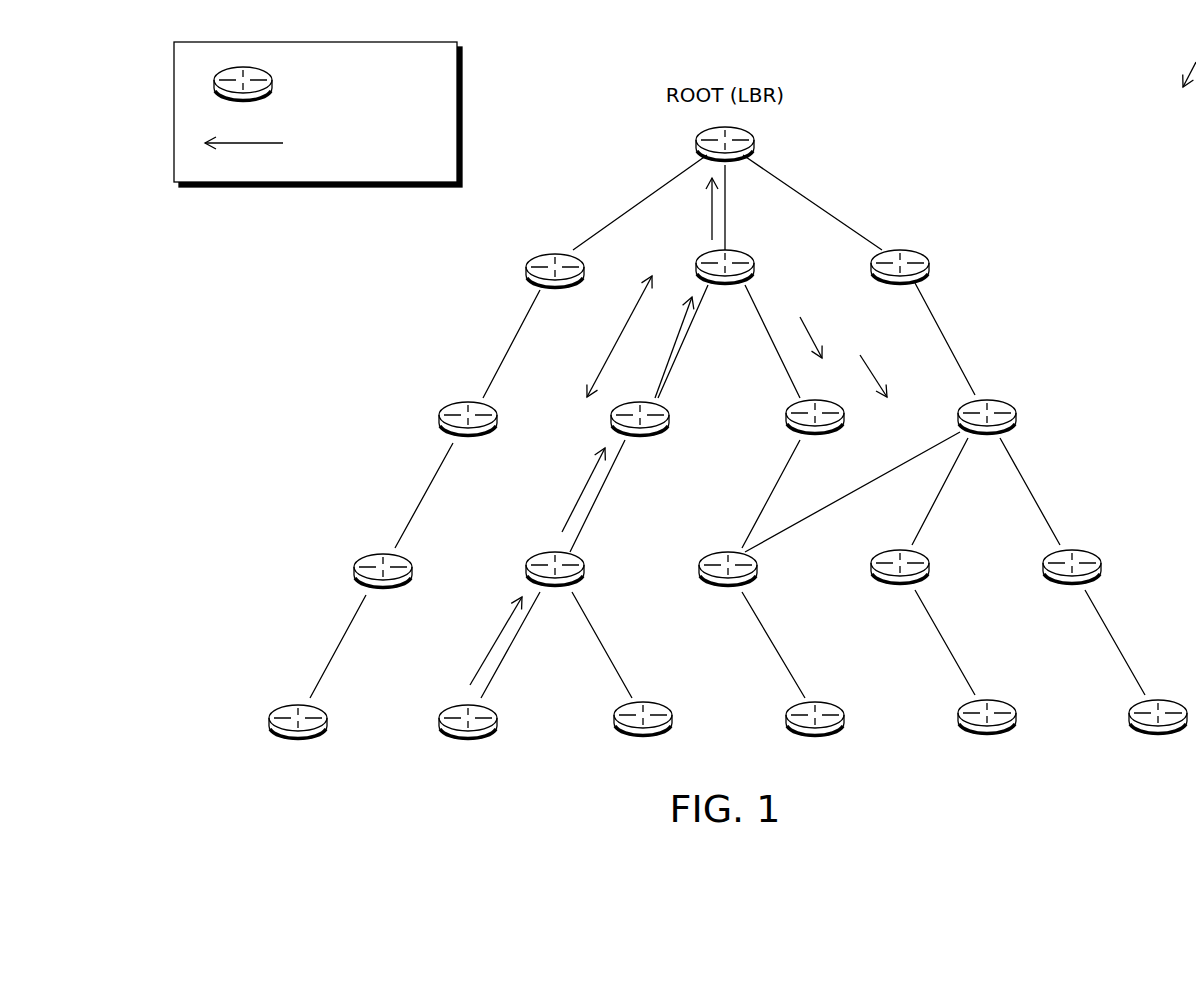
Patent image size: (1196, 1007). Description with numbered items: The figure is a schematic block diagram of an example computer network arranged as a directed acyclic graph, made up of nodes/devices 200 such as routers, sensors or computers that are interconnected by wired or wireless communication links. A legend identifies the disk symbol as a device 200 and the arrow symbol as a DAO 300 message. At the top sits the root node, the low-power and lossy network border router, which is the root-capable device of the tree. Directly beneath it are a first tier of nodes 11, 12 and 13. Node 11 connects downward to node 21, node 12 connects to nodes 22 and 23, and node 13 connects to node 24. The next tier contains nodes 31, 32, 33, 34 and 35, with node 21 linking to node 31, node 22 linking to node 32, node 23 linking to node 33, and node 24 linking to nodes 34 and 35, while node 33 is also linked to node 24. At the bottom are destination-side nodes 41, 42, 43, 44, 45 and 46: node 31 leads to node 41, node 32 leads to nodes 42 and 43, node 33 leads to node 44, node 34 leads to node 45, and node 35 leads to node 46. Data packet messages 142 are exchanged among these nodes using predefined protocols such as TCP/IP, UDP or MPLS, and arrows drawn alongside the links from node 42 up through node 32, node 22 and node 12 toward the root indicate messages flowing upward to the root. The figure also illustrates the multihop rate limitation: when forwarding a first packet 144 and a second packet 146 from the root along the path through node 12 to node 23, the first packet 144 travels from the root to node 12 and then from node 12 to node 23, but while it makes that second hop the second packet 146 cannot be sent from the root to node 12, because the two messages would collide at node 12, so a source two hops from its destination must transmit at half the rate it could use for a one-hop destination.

The node 11 is at (555, 289).
The node 12 is at (725, 287).
The node 13 is at (900, 287).
The node 21 is at (468, 438).
The node 22 is at (640, 437).
The node 23 is at (815, 435).
The node 24 is at (987, 435).
The node 31 is at (383, 589).
The node 32 is at (555, 587).
The node 33 is at (728, 587).
The node 34 is at (900, 585).
The node 35 is at (1072, 585).
The node 41 is at (298, 741).
The node 42 is at (468, 741).
The node 43 is at (643, 737).
The node 44 is at (815, 737).
The node 45 is at (987, 734).
The node 46 is at (1158, 734).
The data packet messages 142 is at (603, 349).
The first packet 144 is at (779, 311).
The second packet 146 is at (843, 347).
The nodes/devices 200 is at (322, 84).
The DAO message 300 is at (303, 140).